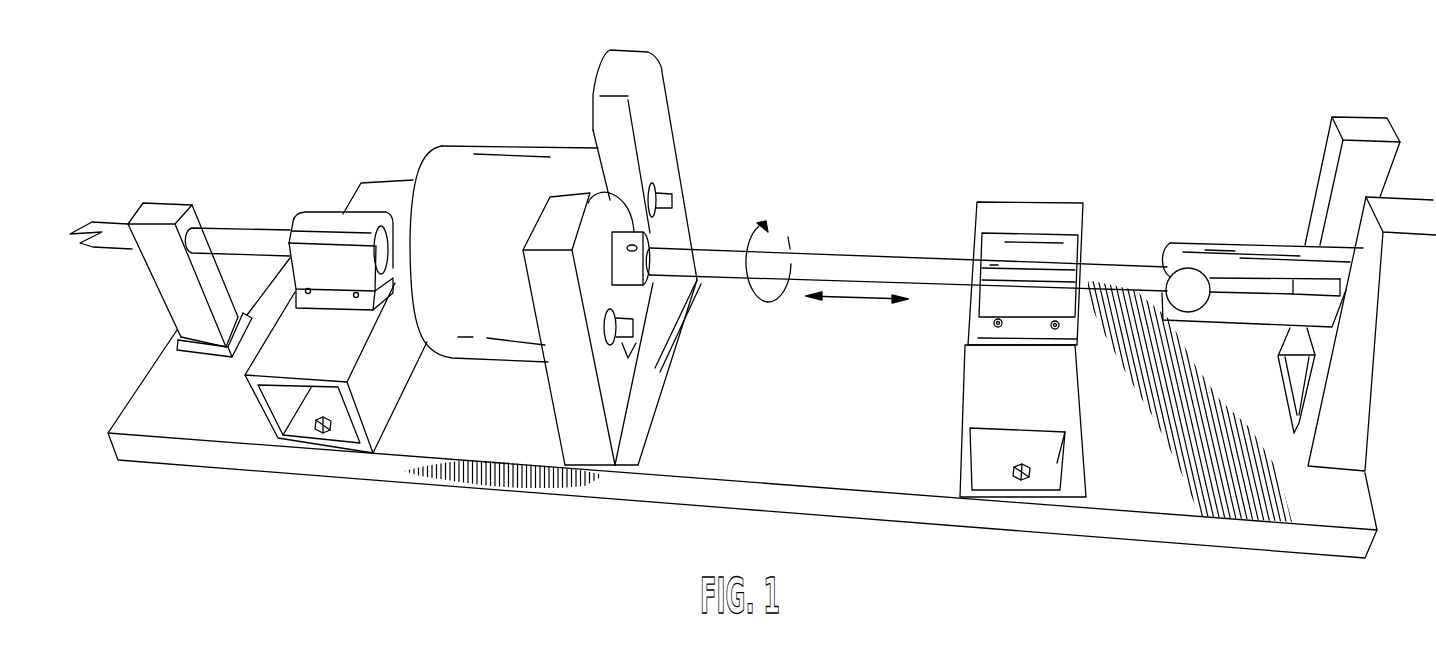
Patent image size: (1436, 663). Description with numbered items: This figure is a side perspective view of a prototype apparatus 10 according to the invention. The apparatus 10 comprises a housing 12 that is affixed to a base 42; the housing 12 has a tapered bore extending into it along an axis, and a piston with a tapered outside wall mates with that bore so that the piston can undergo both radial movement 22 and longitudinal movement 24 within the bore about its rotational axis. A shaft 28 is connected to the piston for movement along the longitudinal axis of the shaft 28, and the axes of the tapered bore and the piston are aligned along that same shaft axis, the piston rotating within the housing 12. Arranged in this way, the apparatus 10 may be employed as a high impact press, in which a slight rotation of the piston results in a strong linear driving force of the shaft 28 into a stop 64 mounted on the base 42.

The apparatus 10 is at (845, 188).
The housing 12 is at (503, 149).
The radial movement 22 is at (765, 304).
The longitudinal movement 24 is at (861, 300).
The shaft 28 is at (866, 256).
The base 42 is at (907, 477).
The stop 64 is at (194, 204).